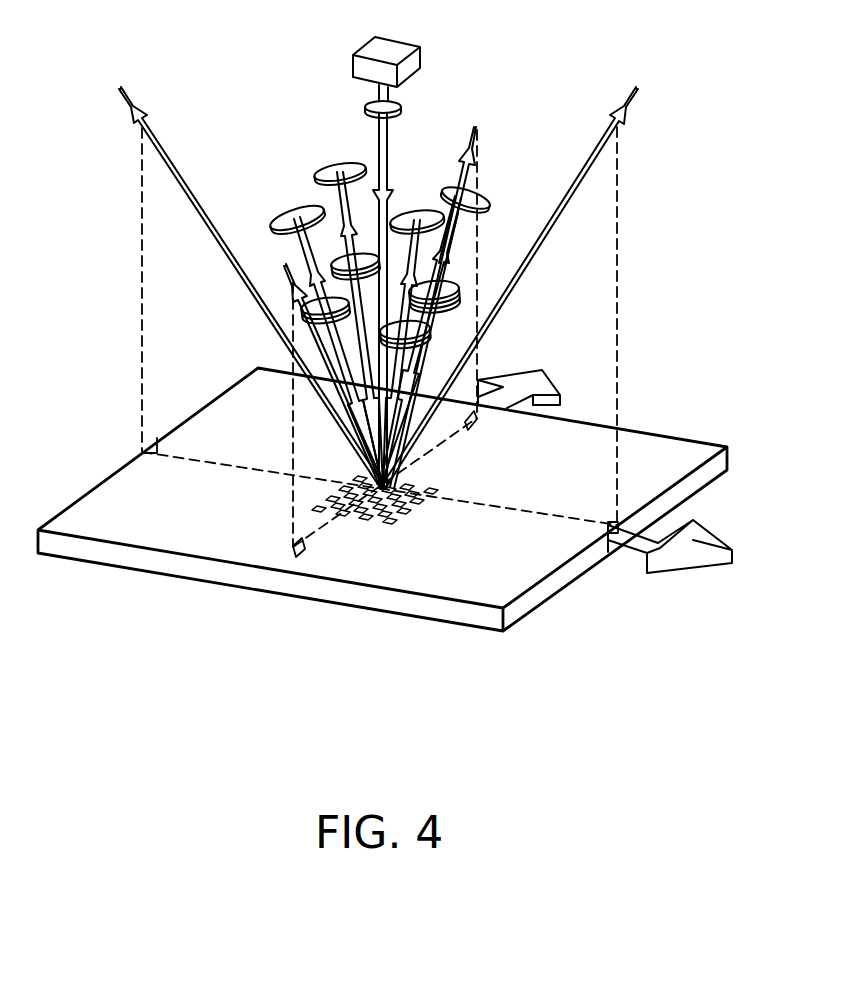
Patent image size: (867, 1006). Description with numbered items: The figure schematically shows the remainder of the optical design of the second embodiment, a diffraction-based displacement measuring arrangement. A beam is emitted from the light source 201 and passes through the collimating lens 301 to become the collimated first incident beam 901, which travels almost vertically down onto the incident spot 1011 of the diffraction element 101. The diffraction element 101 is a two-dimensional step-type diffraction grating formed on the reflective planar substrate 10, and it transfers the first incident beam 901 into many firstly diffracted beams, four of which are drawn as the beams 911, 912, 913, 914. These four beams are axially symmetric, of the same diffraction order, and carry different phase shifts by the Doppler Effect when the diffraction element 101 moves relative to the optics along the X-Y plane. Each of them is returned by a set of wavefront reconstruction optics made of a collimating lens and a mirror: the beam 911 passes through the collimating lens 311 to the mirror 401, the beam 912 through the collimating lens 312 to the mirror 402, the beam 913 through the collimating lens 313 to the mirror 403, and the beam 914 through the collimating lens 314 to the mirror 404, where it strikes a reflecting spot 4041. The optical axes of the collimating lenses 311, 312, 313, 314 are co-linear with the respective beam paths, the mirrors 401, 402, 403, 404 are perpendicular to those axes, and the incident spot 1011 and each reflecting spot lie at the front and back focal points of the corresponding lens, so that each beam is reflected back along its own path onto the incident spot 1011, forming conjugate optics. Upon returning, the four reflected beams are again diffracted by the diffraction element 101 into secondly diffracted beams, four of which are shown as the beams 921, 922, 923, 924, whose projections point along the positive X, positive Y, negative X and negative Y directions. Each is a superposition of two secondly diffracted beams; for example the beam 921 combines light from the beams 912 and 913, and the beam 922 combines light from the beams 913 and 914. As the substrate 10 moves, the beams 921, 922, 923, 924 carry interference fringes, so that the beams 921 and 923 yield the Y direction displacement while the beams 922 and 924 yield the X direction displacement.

The reflective planar substrate 10 is at (397, 379).
The diffraction element 101 is at (457, 502).
The incident spot 1011 is at (396, 521).
The light source 201 is at (373, 48).
The collimating lens 301 is at (372, 103).
The first incident beam 901 is at (379, 155).
The collimating lens 311 is at (459, 288).
The collimating lens 312 is at (328, 256).
The collimating lens 313 is at (302, 310).
The collimating lens 314 is at (432, 327).
The mirror 401 is at (482, 193).
The lens support / optical axis 4041 is at (457, 245).
The mirror 402 is at (321, 164).
The mirror 403 is at (272, 217).
The mirror 404 is at (425, 209).
The firstly diffracted beam 911 is at (449, 262).
The firstly diffracted beam 912 is at (346, 201).
The firstly diffracted beam 913 is at (306, 286).
The firstly diffracted beam 914 is at (418, 268).
The secondly diffracted beam 921 is at (588, 153).
The secondly diffracted beam 922 is at (459, 150).
The secondly diffracted beam 923 is at (177, 182).
The secondly diffracted beam 924 is at (318, 345).